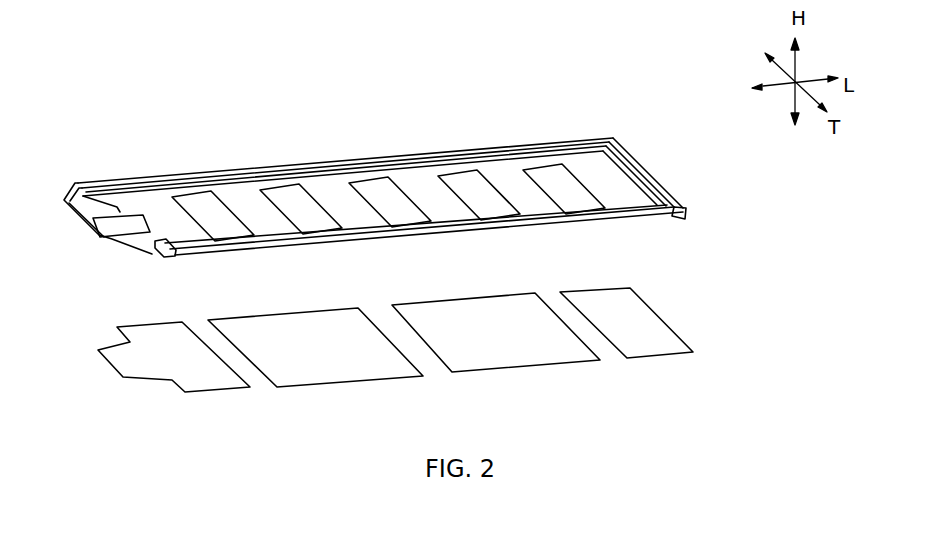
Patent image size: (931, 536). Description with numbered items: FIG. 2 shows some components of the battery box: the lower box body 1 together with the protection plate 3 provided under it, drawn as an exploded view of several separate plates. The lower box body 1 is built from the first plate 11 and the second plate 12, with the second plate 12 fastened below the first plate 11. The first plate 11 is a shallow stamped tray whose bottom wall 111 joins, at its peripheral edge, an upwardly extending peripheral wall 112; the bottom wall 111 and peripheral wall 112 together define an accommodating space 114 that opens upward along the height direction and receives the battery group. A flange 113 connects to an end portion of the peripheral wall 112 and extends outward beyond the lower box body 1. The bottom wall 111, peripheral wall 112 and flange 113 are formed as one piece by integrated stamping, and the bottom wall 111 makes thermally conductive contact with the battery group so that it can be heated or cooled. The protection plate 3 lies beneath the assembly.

The lower box body 1 is at (273, 103).
The first plate 11 is at (453, 138).
The second plate 12 is at (350, 248).
The bottom wall 111 is at (643, 164).
The peripheral wall 112 is at (672, 216).
The flange 113 is at (672, 188).
The accommodating space 114 is at (388, 202).
The protection plate 3 is at (220, 412).